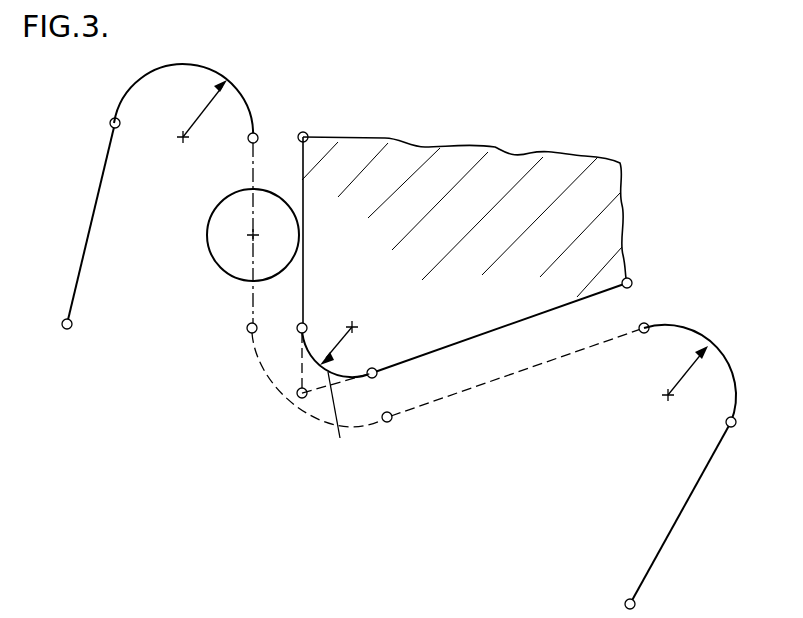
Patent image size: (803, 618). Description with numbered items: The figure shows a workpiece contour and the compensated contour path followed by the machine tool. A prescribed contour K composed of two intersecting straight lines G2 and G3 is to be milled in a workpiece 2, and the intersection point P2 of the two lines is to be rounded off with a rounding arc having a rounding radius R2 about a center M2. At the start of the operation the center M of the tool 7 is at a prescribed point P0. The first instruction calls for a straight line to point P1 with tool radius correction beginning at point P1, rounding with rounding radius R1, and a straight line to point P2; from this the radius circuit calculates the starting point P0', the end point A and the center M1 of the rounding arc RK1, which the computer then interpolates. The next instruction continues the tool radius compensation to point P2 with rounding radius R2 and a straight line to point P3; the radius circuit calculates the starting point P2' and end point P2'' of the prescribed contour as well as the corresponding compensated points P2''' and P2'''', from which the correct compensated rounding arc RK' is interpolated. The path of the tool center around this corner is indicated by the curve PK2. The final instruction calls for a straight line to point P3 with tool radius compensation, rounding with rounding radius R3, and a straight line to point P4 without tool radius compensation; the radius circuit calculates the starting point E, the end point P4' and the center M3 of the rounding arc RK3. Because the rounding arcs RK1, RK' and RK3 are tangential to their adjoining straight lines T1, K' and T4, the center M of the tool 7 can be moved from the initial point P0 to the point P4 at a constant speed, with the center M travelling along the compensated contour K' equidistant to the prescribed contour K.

The workpiece 2 is at (607, 222).
The tool 7 is at (207, 235).
The end point A is at (256, 134).
The starting point E is at (640, 333).
The prescribed contour K is at (420, 265).
The compensated contour K' is at (358, 274).
The center of the tool M is at (250, 237).
The center of the rounding arc RK1 M1 is at (180, 138).
The center of the rounding arc M2 is at (355, 325).
The center of the rounding arc RK3 M3 is at (665, 397).
The prescribed point P0 is at (82, 333).
The starting point P0' is at (101, 110).
The point P1 is at (307, 134).
The intersection point P2 is at (312, 390).
The starting point P2' is at (322, 307).
The end point P2'' is at (396, 381).
The compensated point P2''' is at (227, 346).
The compensated point P2'''' is at (513, 388).
The point P3 is at (632, 283).
The point P4 is at (611, 586).
The end point P4' is at (743, 440).
The path curve PK2 is at (338, 423).
The rounding radius R1 is at (198, 108).
The rounding radius R2 is at (337, 352).
The rounding radius R3 is at (692, 370).
The rounding arc RK1 is at (176, 64).
The rounding arc RK3 is at (700, 335).
The compensated rounding arc RK' is at (295, 380).
The straight line T1 is at (88, 222).
The straight line T4 is at (680, 515).
The straight line G2 is at (303, 275).
The straight line G3 is at (478, 336).